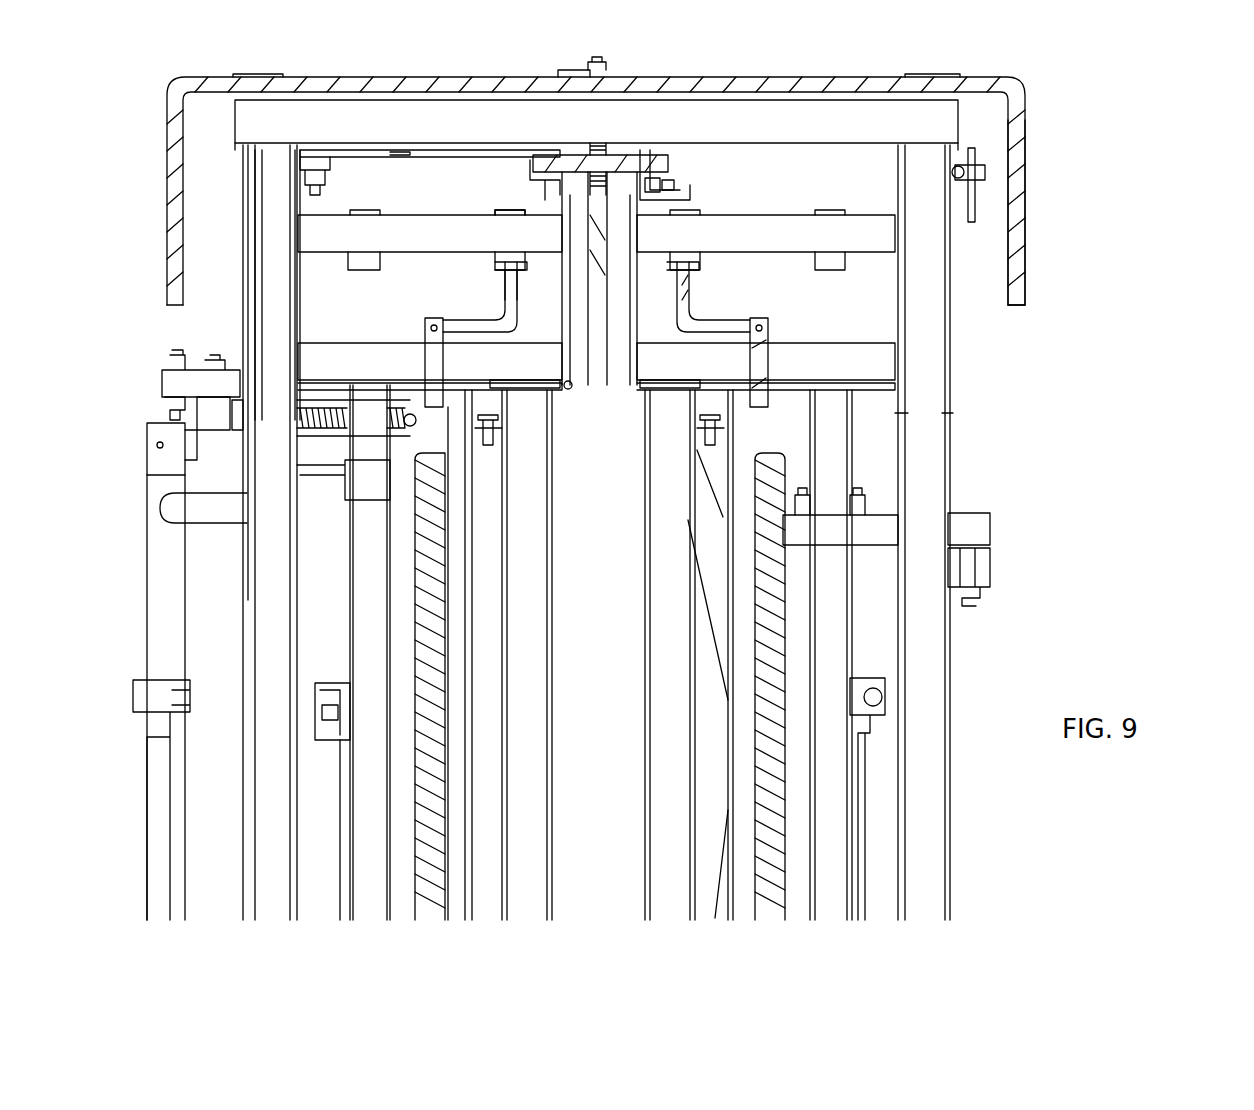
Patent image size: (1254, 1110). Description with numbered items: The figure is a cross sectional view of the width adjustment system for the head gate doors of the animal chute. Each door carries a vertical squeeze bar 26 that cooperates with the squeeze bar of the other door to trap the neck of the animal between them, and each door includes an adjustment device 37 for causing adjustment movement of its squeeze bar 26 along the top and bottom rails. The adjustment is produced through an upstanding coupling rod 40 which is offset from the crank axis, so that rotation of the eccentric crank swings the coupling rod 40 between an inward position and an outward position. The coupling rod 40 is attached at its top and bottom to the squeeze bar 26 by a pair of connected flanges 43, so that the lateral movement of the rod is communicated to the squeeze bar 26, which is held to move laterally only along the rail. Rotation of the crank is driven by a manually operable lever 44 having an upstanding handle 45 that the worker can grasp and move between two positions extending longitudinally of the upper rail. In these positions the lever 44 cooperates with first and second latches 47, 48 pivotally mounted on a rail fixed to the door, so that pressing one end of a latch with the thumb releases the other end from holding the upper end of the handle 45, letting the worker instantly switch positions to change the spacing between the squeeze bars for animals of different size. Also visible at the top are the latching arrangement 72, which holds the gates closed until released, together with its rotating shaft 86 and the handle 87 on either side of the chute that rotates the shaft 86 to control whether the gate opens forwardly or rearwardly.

The squeeze bar 26 is at (536, 546).
The adjustment device 37 is at (434, 347).
The coupling rod 40 is at (462, 473).
The connected flanges 43 is at (487, 404).
The manually operable lever 44 is at (448, 318).
The upstanding handle 45 is at (518, 296).
The first latch 47 is at (378, 246).
The second latch 48 is at (500, 207).
The latching arrangement 72 is at (644, 107).
The rotating shaft 86 is at (832, 76).
The handle 87 is at (1040, 216).